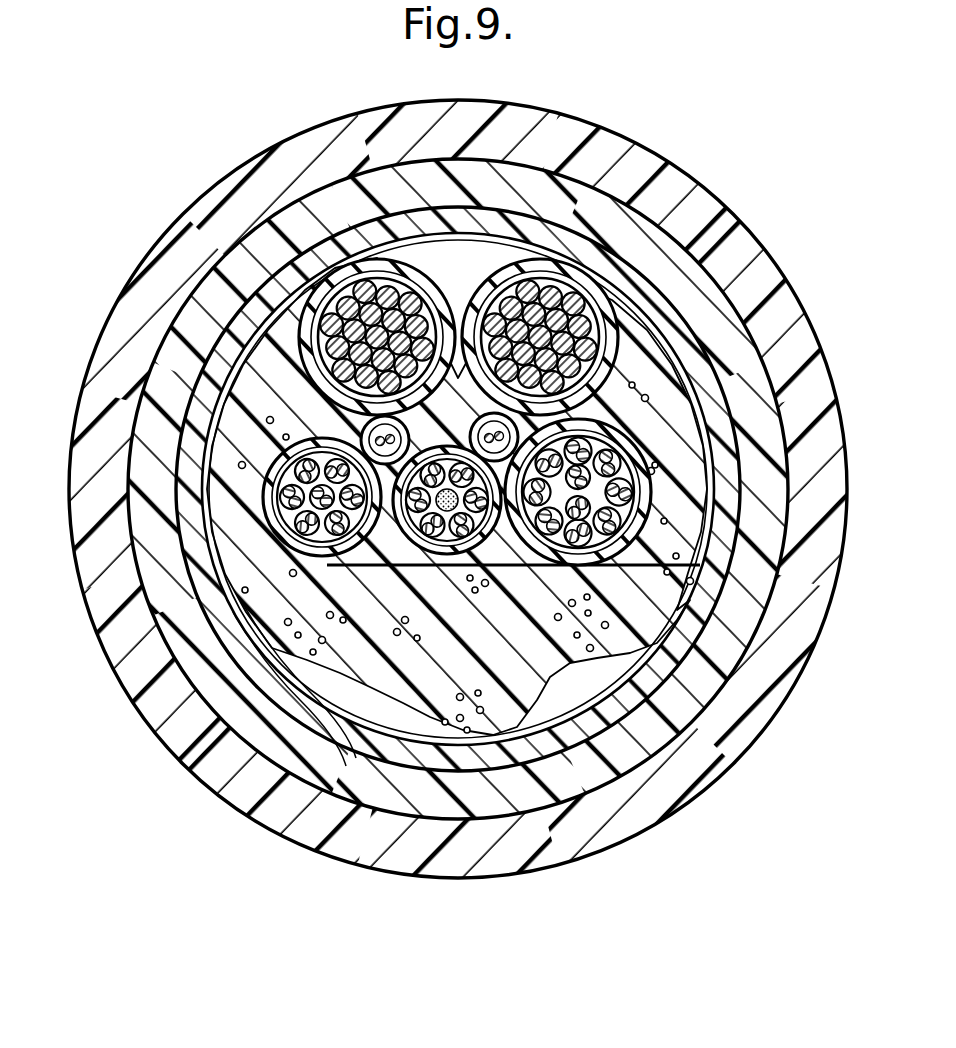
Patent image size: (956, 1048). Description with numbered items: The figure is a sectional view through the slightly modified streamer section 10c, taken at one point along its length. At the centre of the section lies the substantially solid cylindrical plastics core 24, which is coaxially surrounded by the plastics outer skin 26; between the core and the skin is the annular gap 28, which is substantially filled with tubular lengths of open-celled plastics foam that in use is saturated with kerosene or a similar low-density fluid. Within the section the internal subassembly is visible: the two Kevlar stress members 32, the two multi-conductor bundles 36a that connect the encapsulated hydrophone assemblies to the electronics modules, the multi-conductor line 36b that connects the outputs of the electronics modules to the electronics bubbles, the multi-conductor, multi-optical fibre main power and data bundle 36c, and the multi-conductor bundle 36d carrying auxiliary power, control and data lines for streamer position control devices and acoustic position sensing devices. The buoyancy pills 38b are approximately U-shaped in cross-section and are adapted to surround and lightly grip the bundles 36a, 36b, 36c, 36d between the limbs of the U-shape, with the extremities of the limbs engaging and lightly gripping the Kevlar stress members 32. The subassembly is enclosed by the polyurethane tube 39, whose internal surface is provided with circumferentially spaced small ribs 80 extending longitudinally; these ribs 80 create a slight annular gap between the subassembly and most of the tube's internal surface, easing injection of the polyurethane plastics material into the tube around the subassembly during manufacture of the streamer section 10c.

The streamer section 10c is at (664, 122).
The plastics outer skin 26 is at (812, 328).
The annular gap 28 is at (713, 303).
The polyurethane tube 39 is at (291, 291).
The core 24 is at (606, 686).
The buoyancy pills 38b is at (495, 710).
The ribs 80 is at (263, 712).
The multi-conductor bundles 36a is at (300, 386).
The Kevlar stress members 32 is at (490, 278).
The main power and data bundle 36c is at (618, 463).
The multi-conductor bundle 36d is at (266, 525).
The multi-conductor line 36b is at (465, 452).